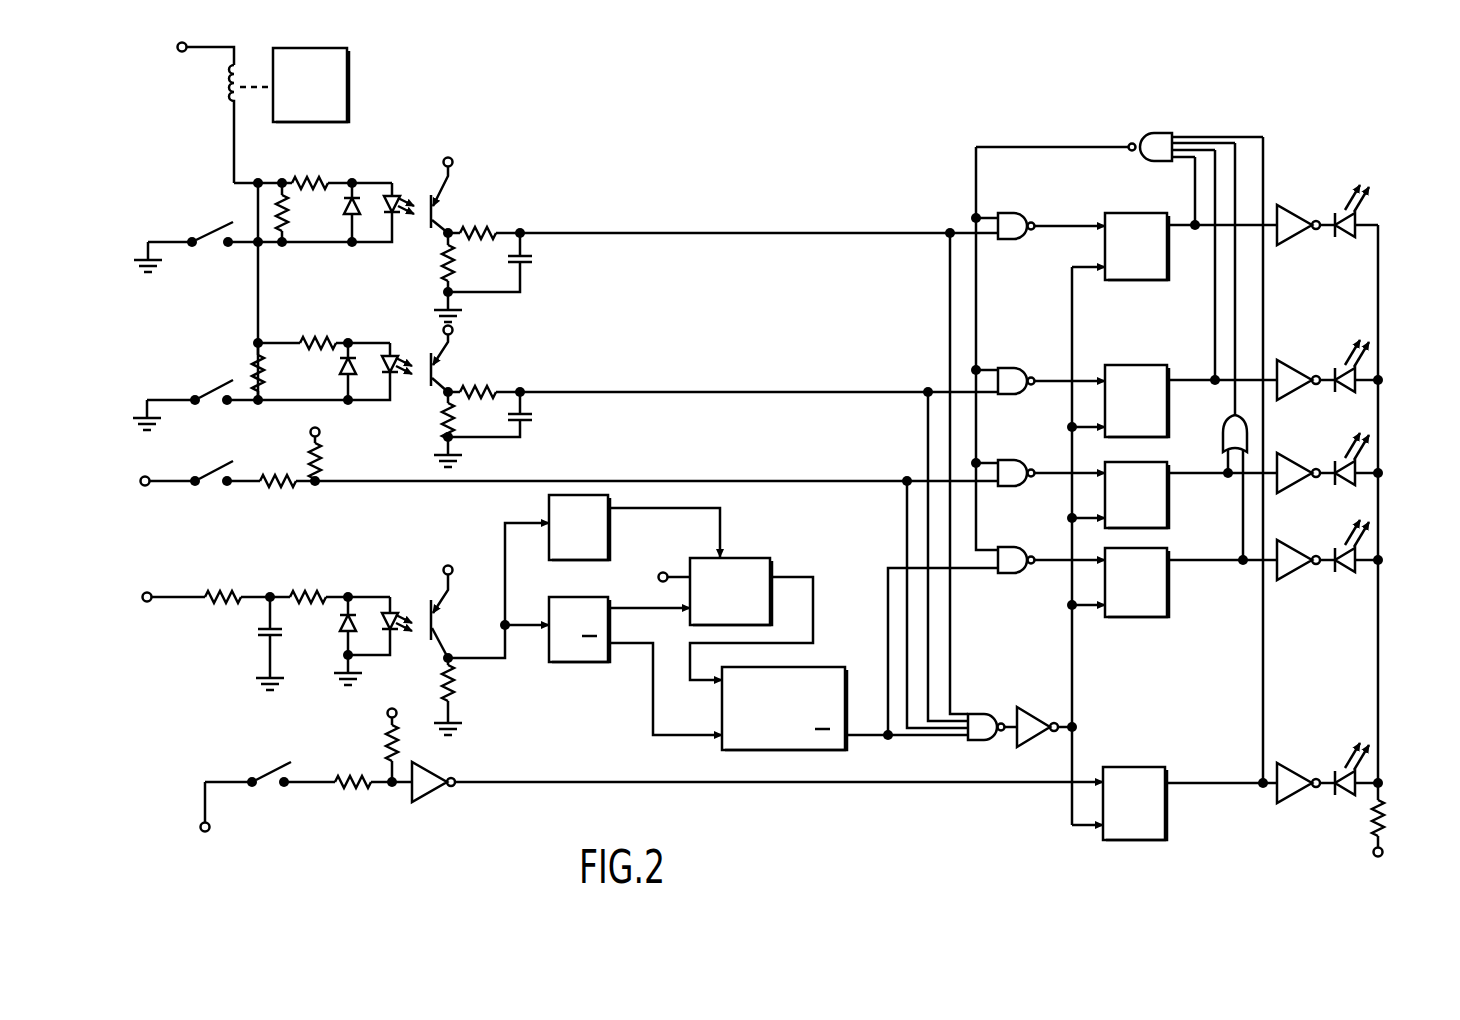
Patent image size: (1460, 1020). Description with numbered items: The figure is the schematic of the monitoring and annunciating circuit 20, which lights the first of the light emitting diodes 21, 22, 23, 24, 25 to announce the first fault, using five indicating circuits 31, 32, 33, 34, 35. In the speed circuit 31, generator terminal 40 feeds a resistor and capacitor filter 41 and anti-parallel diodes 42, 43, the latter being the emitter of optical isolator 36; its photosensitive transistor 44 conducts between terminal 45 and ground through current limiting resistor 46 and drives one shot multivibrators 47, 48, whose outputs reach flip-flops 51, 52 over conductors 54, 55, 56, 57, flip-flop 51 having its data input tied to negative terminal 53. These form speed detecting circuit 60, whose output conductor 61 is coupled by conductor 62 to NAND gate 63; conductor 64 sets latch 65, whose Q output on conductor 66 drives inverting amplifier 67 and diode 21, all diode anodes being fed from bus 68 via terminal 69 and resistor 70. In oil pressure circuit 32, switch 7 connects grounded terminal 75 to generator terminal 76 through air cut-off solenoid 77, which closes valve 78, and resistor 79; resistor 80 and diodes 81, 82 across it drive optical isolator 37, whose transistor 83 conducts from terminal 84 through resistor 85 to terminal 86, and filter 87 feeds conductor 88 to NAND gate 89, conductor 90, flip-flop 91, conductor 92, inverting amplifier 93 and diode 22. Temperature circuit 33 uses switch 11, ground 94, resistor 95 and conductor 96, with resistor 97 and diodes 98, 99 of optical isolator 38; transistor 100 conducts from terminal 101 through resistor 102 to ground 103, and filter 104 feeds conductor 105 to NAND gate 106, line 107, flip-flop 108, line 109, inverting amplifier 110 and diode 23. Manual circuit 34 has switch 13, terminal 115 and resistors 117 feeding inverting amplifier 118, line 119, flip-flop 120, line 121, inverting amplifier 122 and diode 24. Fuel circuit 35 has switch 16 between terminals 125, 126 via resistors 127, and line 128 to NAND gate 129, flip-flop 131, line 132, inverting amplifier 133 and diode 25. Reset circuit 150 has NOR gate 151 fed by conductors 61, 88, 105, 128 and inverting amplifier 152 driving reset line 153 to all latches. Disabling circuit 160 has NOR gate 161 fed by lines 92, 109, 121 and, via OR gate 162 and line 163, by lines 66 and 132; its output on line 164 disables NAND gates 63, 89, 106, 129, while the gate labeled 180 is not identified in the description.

The oil pressure sensing switch 7 is at (217, 248).
The temperature responsive switch 11 is at (212, 408).
The switch 13 is at (272, 786).
The switch 16 is at (210, 488).
The circuit 20 is at (694, 154).
The light emitting diode 21 is at (1338, 566).
The light emitting diode 22 is at (1345, 239).
The light emitting diode 23 is at (1338, 389).
The light emitting diode 24 is at (1338, 799).
The light emitting diode 25 is at (1336, 485).
The engine speed detecting and indicating circuit 31 is at (1228, 640).
The oil pressure responsive indicating circuit 32 is at (1132, 331).
The temperature responsive indicating circuit 33 is at (1160, 432).
The manual shut down responsive indicating circuit 34 is at (1160, 879).
The low fuel condition indicating circuit 35 is at (1160, 549).
The optical isolator 36 is at (414, 596).
The optical isolator 37 is at (414, 190).
The optical isolator 38 is at (410, 366).
The terminal 40 is at (148, 603).
The resistor and capacitor filter 41 is at (276, 590).
The diode 42 is at (344, 617).
The light emitting diode 43 is at (378, 629).
The light sensitive transistor 44 is at (449, 618).
The terminal 45 is at (452, 573).
The current limiting resistor 46 is at (440, 677).
The first one shot multivibrator 47 is at (582, 598).
The second one shot multivibrator 48 is at (550, 558).
The first data type flip-flop 51 is at (770, 561).
The second data type flip-flop 52 is at (792, 665).
The terminal 53 is at (665, 572).
The conductor 54 is at (641, 610).
The conductor 55 is at (736, 508).
The conductor 56 is at (815, 598).
The conductor 57 is at (652, 718).
The speed detecting circuit 60 is at (572, 728).
The output conductor 61 is at (866, 732).
The conductor 62 is at (953, 588).
The NAND gate 63 is at (1012, 576).
The conductor 64 is at (1045, 571).
The set-reset flip-flop 65 is at (1165, 619).
The conductor 66 is at (1202, 563).
The inverting amplifier 67 is at (1293, 578).
The bus 68 is at (1383, 503).
The terminal 69 is at (1386, 820).
The resistor 70 is at (1374, 858).
The grounded terminal 75 is at (146, 252).
The terminal 76 is at (181, 53).
The air cut-off solenoid 77 is at (228, 93).
The air cut-off butterfly valve 78 is at (350, 92).
The resistor 79 is at (288, 222).
The further resistor 80 is at (316, 180).
The diode 81 is at (343, 205).
The light emitting diode 82 is at (321, 214).
The photosensitive transistor 83 is at (442, 210).
The terminal 84 is at (449, 157).
The resistor 85 is at (440, 261).
The terminal 86 is at (440, 293).
The resistor and capacitor filter 87 is at (498, 252).
The conductor 88 is at (716, 232).
The NAND gate 89 is at (1008, 240).
The conductor 90 is at (1056, 222).
The set-reset flip-flop 91 is at (1135, 212).
The conductor 92 is at (1195, 230).
The inverting amplifier 93 is at (1295, 216).
The source of ground potential 94 is at (143, 410).
The resistor 95 is at (263, 374).
The conductor 96 is at (257, 300).
The resistor 97 is at (320, 342).
The diode 98 is at (344, 371).
The light emitting diode 99 is at (319, 376).
The photosensitive transistor 100 is at (442, 367).
The terminal 101 is at (444, 330).
The resistor 102 is at (442, 418).
The source of ground potential 103 is at (442, 438).
The resistor and capacitor filter circuit 104 is at (500, 413).
The conductor 105 is at (718, 384).
The NAND gate 106 is at (1027, 366).
The line 107 is at (1045, 392).
The set-reset flip-flop 108 is at (1133, 364).
The line 109 is at (1192, 376).
The inverting amplifier 110 is at (1295, 372).
The terminal 115 is at (200, 830).
The pair of resistors 117 is at (388, 752).
The inverting amplifier 118 is at (436, 803).
The line 119 is at (716, 789).
The set-reset flip-flop 120 is at (1133, 766).
The line 121 is at (1200, 781).
The inverting amplifier 122 is at (1308, 753).
The terminal 125 is at (139, 488).
The terminal 126 is at (312, 430).
The pair of resistors 127 is at (280, 486).
The line 128 is at (713, 479).
The NAND gate 129 is at (1013, 491).
The set-reset flip-flop 131 is at (1172, 490).
The line 132 is at (1167, 468).
The inverting amplifier 133 is at (1295, 462).
The automatic reset circuit 150 is at (990, 758).
The NOR gate 151 is at (988, 702).
The inverting amplifier 152 is at (1036, 716).
The line 153 is at (1074, 745).
The disabling circuit 160 is at (1256, 116).
The NOR gate 161 is at (1160, 132).
The OR gate 162 is at (1225, 438).
The line 163 is at (1273, 291).
The line 164 is at (1072, 146).
The NAND gate 180 is at (1042, 489).